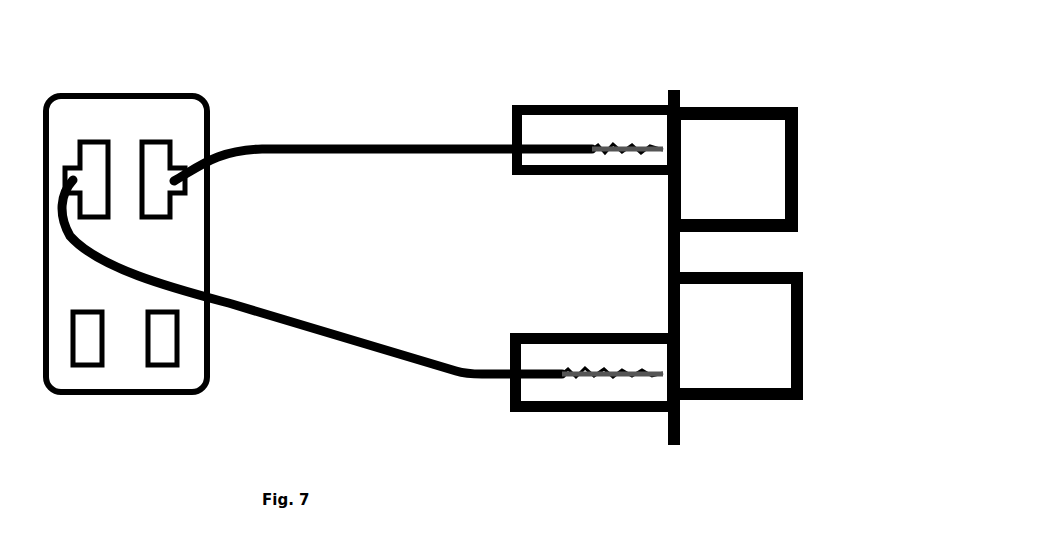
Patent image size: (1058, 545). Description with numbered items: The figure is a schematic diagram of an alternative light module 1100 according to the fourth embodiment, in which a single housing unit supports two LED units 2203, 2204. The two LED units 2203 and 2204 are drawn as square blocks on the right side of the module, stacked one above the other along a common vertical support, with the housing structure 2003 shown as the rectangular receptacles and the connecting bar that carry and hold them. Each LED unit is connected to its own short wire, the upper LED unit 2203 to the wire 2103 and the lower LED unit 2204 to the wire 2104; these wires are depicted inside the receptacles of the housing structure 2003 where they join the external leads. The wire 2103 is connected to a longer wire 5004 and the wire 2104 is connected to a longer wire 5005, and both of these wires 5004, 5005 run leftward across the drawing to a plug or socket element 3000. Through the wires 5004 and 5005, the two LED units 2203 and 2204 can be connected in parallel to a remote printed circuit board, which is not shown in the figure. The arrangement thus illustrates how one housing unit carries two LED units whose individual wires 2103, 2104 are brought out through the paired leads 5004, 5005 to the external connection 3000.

The socket 3000 is at (122, 72).
The wire 5004 is at (348, 143).
The wire 5005 is at (345, 335).
The light module 1100 is at (693, 261).
The connector housing 2003 is at (532, 175).
The wire 2103 is at (660, 147).
The wire 2104 is at (648, 375).
The LED unit 2203 is at (797, 147).
The LED unit 2204 is at (803, 337).